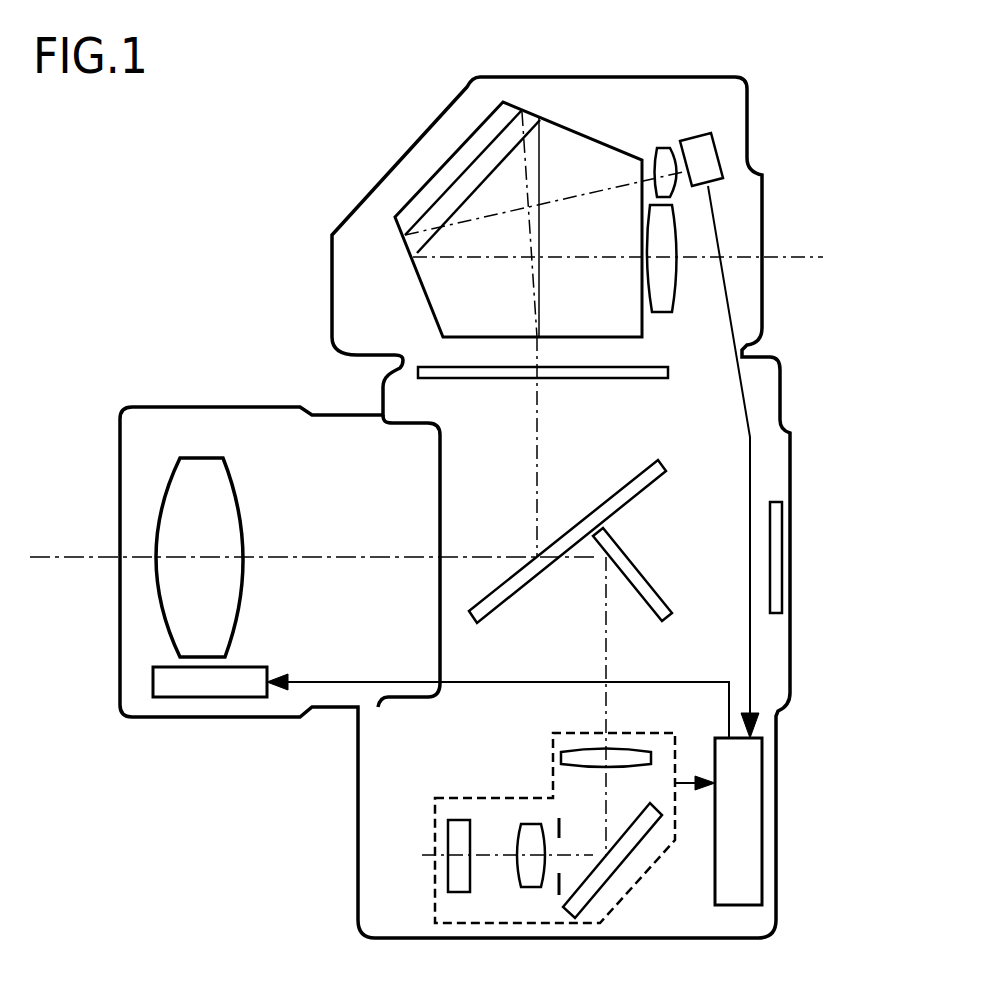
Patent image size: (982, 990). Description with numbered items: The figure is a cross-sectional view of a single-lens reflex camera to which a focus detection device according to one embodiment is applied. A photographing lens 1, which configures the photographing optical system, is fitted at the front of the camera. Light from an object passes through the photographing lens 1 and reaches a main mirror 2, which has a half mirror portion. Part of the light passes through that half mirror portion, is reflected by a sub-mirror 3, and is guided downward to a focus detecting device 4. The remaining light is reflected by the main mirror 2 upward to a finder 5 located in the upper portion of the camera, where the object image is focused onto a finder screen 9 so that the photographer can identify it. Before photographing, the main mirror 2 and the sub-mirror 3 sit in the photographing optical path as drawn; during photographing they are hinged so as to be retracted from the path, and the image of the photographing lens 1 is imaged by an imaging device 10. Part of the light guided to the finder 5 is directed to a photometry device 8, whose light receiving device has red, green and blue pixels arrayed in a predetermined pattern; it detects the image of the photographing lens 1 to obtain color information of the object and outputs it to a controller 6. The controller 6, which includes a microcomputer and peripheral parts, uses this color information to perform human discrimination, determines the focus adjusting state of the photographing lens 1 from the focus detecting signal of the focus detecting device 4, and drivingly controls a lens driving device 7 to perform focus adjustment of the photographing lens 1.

The photographing lens 1 is at (198, 457).
The main mirror 2 is at (594, 509).
The sub-mirror 3 is at (655, 590).
The focus detecting device 4 is at (507, 797).
The finder 5 is at (637, 77).
The controller 6 is at (762, 818).
The lens driving device 7 is at (215, 682).
The photometry device 8 is at (713, 147).
The finder screen 9 is at (663, 380).
The imaging device 10 is at (778, 500).